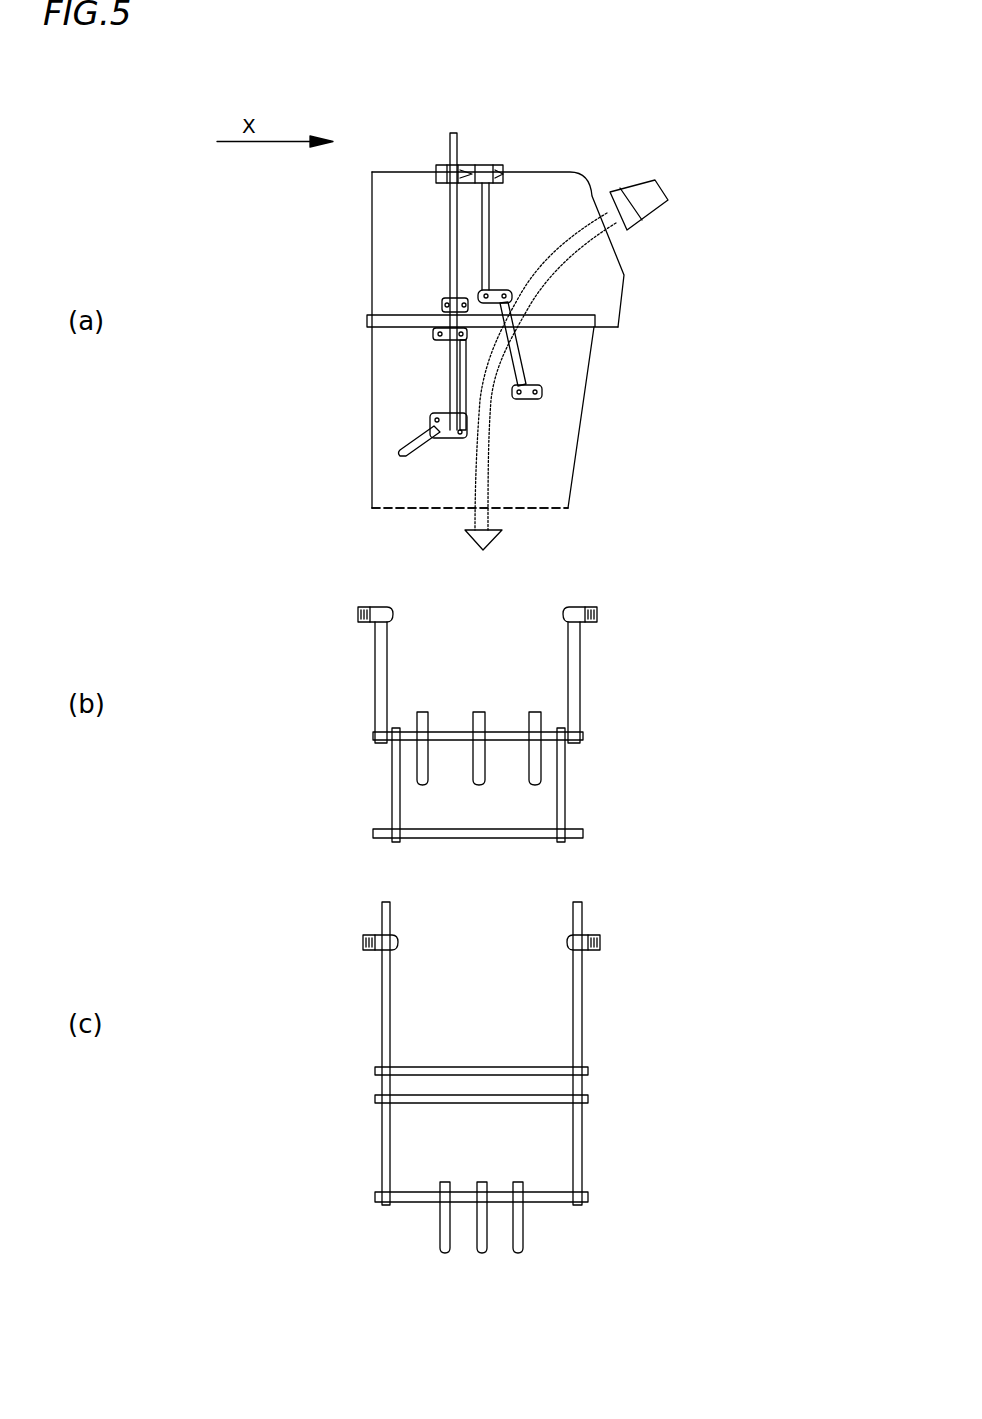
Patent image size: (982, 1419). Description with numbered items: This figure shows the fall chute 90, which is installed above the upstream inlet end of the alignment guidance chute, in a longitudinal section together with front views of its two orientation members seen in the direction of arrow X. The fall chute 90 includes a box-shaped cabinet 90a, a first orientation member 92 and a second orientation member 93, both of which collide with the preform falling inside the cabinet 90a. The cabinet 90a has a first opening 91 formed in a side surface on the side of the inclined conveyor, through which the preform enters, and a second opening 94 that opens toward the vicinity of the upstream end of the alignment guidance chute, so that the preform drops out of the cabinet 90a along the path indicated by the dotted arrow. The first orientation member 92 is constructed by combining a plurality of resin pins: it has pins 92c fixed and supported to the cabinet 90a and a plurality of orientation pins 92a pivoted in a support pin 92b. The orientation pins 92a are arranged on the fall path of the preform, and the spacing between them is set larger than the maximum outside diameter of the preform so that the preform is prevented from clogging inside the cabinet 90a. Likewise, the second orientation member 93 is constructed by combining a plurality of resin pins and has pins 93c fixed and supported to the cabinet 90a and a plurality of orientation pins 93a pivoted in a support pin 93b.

The fall chute 90 is at (550, 143).
The cabinet 90a is at (578, 447).
The first opening 91 is at (606, 177).
The first orientation member 92 is at (514, 178).
The orientation pins 92a is at (418, 772).
The support pin 92b is at (515, 727).
The pins 92c is at (367, 607).
The second orientation member 93 is at (450, 232).
The orientation pins 93a is at (450, 1248).
The support pin 93b is at (543, 1192).
The pins 93c is at (365, 935).
The second opening 94 is at (527, 510).